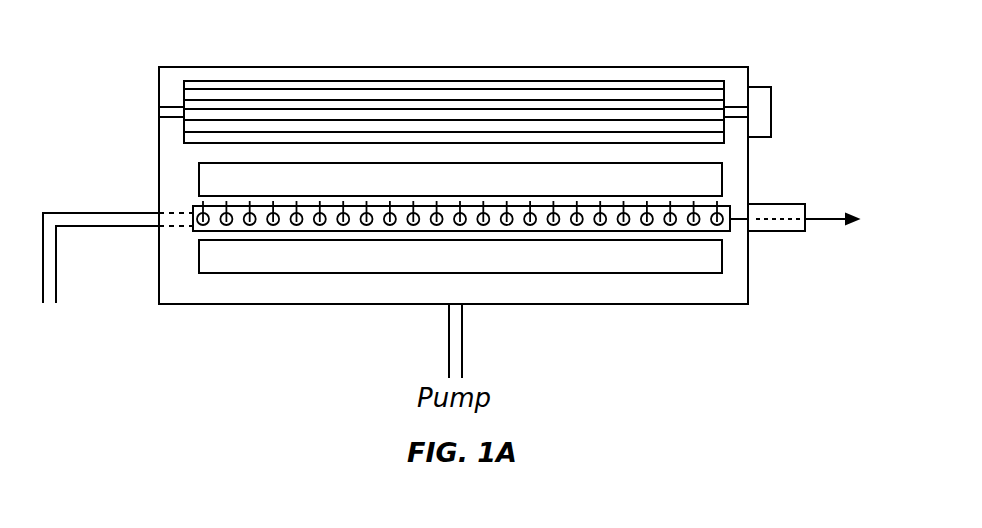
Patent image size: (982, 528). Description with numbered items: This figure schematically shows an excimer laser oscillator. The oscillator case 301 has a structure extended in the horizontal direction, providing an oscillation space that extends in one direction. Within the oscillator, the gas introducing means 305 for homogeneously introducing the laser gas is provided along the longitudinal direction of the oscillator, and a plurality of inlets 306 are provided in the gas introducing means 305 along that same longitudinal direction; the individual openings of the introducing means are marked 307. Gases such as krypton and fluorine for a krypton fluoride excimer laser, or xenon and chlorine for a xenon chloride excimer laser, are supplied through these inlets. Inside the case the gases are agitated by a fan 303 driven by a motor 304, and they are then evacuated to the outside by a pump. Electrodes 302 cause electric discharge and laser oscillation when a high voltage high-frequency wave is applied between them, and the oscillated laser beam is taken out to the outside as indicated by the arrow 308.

The oscillator case 301 is at (453, 165).
The electrodes 302 is at (711, 190).
The fan 303 is at (453, 85).
The motor 304 is at (791, 102).
The gas introducing means 305 is at (414, 253).
The inlets 306 is at (118, 275).
The gas nozzle 307 is at (410, 190).
The arrow 308 is at (807, 204).